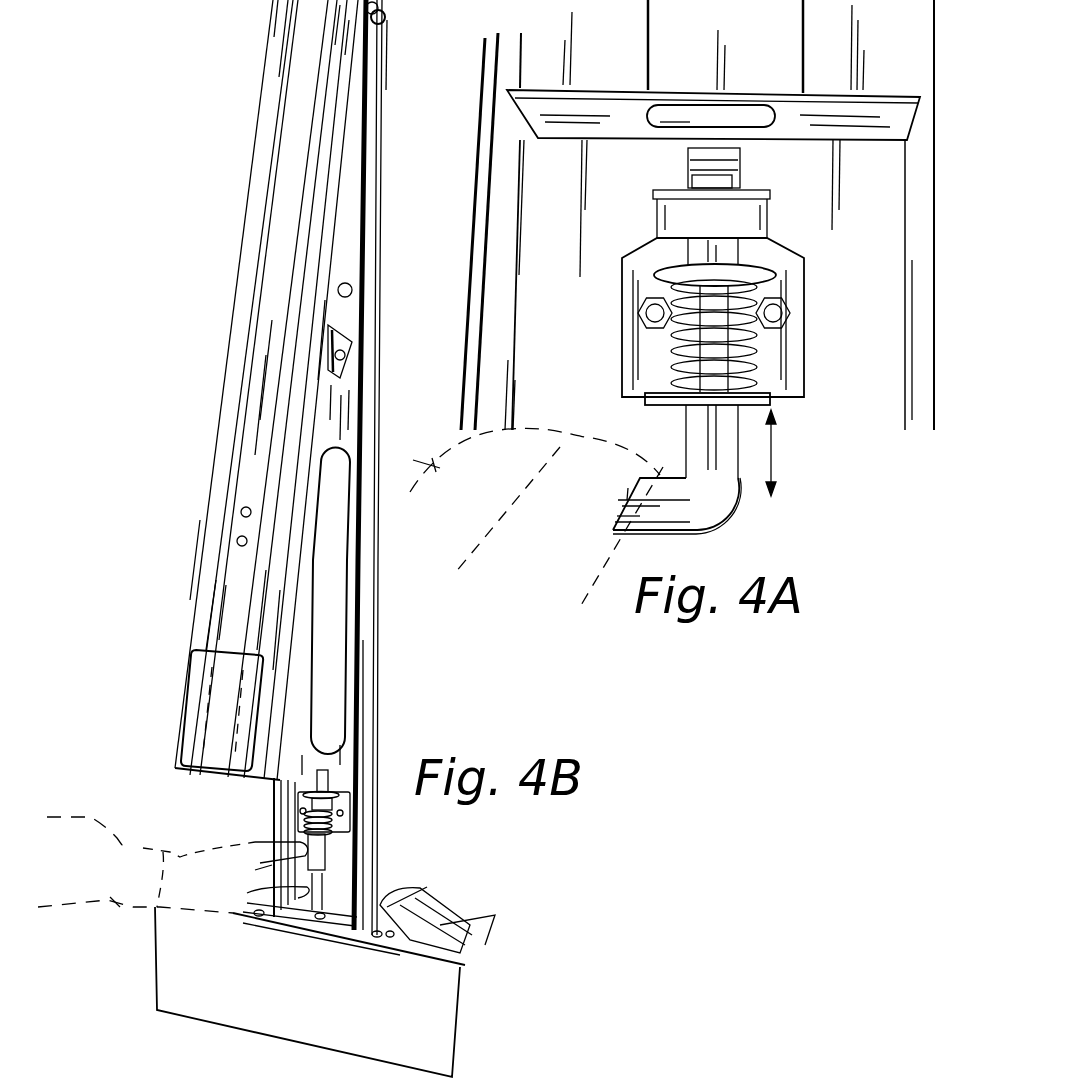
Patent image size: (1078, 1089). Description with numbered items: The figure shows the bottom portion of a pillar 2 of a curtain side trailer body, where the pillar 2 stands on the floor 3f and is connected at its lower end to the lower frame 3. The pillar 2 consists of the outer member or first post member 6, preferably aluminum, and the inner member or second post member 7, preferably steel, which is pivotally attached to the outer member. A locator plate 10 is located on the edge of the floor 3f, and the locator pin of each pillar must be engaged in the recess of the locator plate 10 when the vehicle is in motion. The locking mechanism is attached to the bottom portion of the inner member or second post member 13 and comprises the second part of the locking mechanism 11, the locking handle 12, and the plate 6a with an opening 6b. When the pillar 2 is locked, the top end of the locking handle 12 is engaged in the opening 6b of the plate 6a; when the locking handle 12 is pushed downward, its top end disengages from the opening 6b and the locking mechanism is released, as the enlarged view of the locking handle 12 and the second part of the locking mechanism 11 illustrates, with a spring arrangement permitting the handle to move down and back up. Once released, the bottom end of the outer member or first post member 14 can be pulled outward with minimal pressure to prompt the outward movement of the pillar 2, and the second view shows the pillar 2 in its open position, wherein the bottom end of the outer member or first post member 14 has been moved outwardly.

In FIG. 4B, the pillar 2 is at (204, 312).
In FIG. 4B, the lower frame 3 is at (463, 930).
In FIG. 4B, the floor 3f is at (487, 918).
In FIG. 4B, the outer member or first post member 6 is at (262, 131).
In FIG. 4A, the outer member or first post member 6 is at (762, 16).
In FIG. 4A, the plate with an opening 6a is at (876, 97).
In FIG. 4A, the opening 6b is at (755, 120).
In FIG. 4B, the inner member or second post member 7 is at (350, 397).
In FIG. 4B, the locator plate 10 is at (393, 907).
In FIG. 4B, the second part of the locking mechanism 11 is at (350, 827).
In FIG. 4A, the second part of the locking mechanism 11 is at (758, 362).
In FIG. 4B, the locking handle 12 is at (330, 861).
In FIG. 4A, the locking handle 12 is at (723, 498).
In FIG. 4B, the inner member or second post member 13 is at (348, 770).
In FIG. 4A, the inner member or second post member 13 is at (875, 300).
In FIG. 4B, the bottom end of the outer member or first post member 14 is at (200, 693).